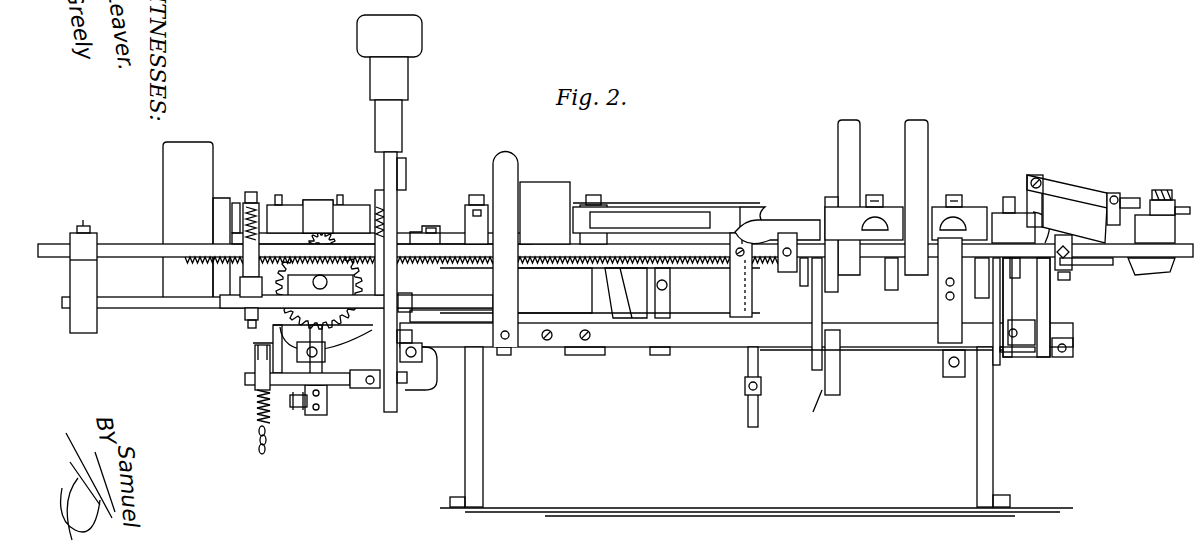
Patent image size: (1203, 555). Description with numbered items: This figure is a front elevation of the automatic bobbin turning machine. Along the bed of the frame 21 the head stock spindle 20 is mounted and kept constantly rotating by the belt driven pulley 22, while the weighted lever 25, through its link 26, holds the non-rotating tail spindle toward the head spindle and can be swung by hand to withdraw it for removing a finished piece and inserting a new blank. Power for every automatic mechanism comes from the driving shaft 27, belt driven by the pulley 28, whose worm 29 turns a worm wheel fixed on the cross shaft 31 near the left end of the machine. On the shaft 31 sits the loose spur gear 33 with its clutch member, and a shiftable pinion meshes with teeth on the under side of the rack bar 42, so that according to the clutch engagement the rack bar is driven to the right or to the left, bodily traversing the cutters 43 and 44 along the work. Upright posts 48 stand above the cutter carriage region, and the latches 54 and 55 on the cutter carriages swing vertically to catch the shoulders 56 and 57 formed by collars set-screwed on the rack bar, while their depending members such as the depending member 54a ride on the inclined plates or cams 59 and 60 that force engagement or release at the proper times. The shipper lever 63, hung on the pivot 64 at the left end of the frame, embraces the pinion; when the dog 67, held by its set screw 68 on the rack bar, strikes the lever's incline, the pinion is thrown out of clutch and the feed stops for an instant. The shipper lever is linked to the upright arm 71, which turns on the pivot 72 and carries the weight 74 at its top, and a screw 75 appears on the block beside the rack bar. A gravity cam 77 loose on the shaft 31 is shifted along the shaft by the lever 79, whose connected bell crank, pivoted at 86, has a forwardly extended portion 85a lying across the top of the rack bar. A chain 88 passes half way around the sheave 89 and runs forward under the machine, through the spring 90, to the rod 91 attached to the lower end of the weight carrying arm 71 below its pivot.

The head stock spindle 20 is at (640, 242).
The frame 21 is at (478, 412).
The belt driven pulley 22 is at (545, 213).
The weighted lever 25 is at (1085, 190).
The link 26 is at (1074, 216).
The driving shaft 27 is at (283, 213).
The pulley 28 is at (196, 219).
The worm 29 is at (345, 213).
The shaft 31 is at (319, 286).
The spur gear 33 is at (275, 327).
The rack bar 42 is at (548, 271).
The cutter 43 is at (951, 218).
The cutter 44 is at (875, 228).
The post 48 is at (883, 197).
The latch 54 is at (1020, 237).
The depending member 54a is at (1015, 303).
The latch 55 is at (810, 222).
The shoulder 56 is at (1074, 250).
The shoulder 57 is at (787, 233).
The inclined plate or cam 59 is at (622, 347).
The inclined plate or cam 60 is at (940, 355).
The shipper lever 63 is at (153, 285).
The pivot 64 is at (231, 311).
The dog 67 is at (85, 276).
The set screw 68 is at (93, 266).
The upright arm 71 is at (390, 163).
The pivot 72 is at (382, 302).
The weight 74 is at (736, 295).
The screw 75 is at (737, 262).
The cam 77 is at (358, 356).
The lever 79 is at (318, 370).
The forwardly extended portion 85a is at (456, 235).
The pivot 86 is at (438, 232).
The chain 88 is at (258, 437).
The sheave 89 is at (257, 358).
The spring 90 is at (257, 401).
The rod 91 is at (362, 388).